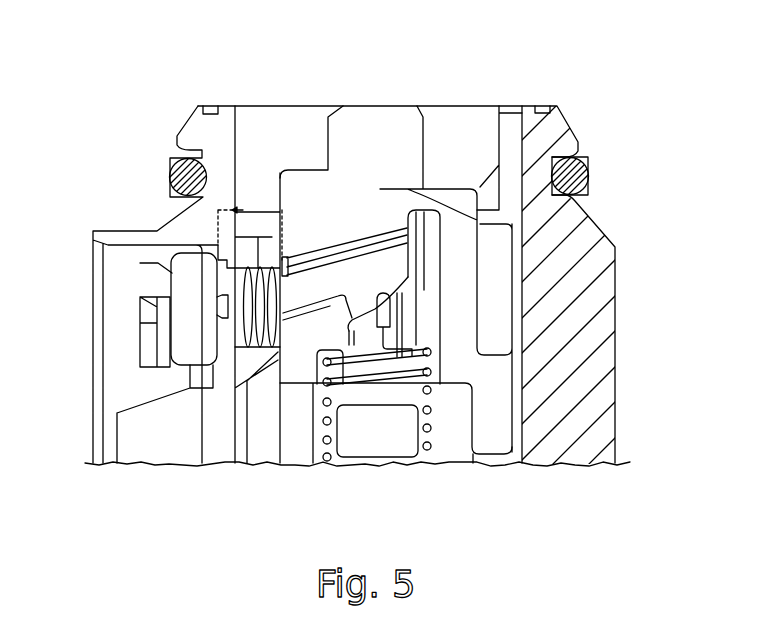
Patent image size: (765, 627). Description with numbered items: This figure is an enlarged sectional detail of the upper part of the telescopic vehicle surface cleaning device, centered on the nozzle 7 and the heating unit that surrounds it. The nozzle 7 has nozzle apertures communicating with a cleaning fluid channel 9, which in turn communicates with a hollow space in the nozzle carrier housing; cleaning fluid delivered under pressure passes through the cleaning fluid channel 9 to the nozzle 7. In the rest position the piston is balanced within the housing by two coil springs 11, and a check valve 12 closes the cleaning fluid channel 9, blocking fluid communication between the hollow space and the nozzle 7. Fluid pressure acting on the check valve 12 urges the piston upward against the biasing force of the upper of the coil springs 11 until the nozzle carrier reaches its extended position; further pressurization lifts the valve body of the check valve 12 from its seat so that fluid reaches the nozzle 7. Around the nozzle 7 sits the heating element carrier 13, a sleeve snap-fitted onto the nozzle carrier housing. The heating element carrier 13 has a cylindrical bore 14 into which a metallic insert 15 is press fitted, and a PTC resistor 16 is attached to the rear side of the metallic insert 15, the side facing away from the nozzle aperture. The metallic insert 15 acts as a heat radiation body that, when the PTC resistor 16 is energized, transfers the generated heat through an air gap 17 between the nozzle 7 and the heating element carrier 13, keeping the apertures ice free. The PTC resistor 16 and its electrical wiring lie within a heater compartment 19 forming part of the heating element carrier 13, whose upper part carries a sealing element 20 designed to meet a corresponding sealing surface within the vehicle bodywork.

The nozzle 7 is at (356, 232).
The cleaning fluid channel 9 is at (433, 403).
The coil springs 11 is at (432, 354).
The check valve 12 is at (388, 440).
The heating element carrier 13 is at (616, 410).
The cylindrical bore 14 is at (235, 262).
The metallic insert 15 is at (228, 320).
The PTC resistor 16 is at (184, 348).
The air gap 17 is at (260, 290).
The heater compartment 19 is at (133, 304).
The sealing element 20 is at (583, 170).